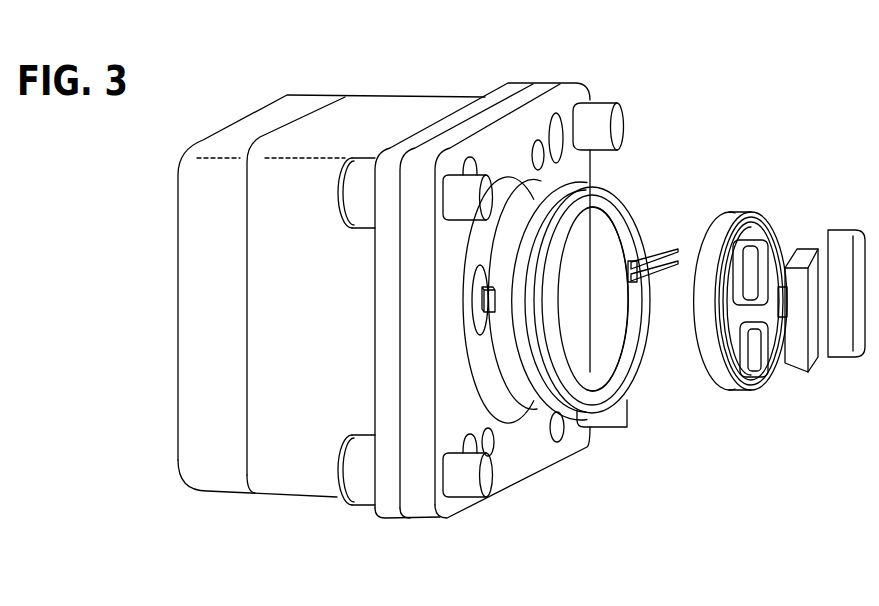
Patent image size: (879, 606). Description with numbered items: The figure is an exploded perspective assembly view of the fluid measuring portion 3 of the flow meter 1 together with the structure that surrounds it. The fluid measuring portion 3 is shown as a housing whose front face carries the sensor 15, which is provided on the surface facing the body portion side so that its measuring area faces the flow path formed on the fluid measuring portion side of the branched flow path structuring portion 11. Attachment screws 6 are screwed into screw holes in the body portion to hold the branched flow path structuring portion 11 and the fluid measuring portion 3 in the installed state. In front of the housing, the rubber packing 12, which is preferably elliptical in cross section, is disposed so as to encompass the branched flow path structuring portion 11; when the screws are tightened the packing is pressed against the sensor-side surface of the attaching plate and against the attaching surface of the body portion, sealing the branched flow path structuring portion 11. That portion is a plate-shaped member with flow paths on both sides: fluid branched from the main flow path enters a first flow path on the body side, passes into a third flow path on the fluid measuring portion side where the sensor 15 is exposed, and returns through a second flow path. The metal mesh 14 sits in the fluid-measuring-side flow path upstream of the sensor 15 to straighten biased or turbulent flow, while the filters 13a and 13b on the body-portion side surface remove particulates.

The flow meter 1 is at (811, 108).
The fluid measuring portion 3 is at (477, 547).
The attachment screws 6 is at (363, 183).
The branched flow path structuring portion 11 is at (732, 217).
The rubber packing 12 is at (637, 383).
The filter 13a is at (805, 373).
The filter 13b is at (845, 231).
The metal mesh 14 is at (670, 249).
The sensor 15 is at (494, 288).